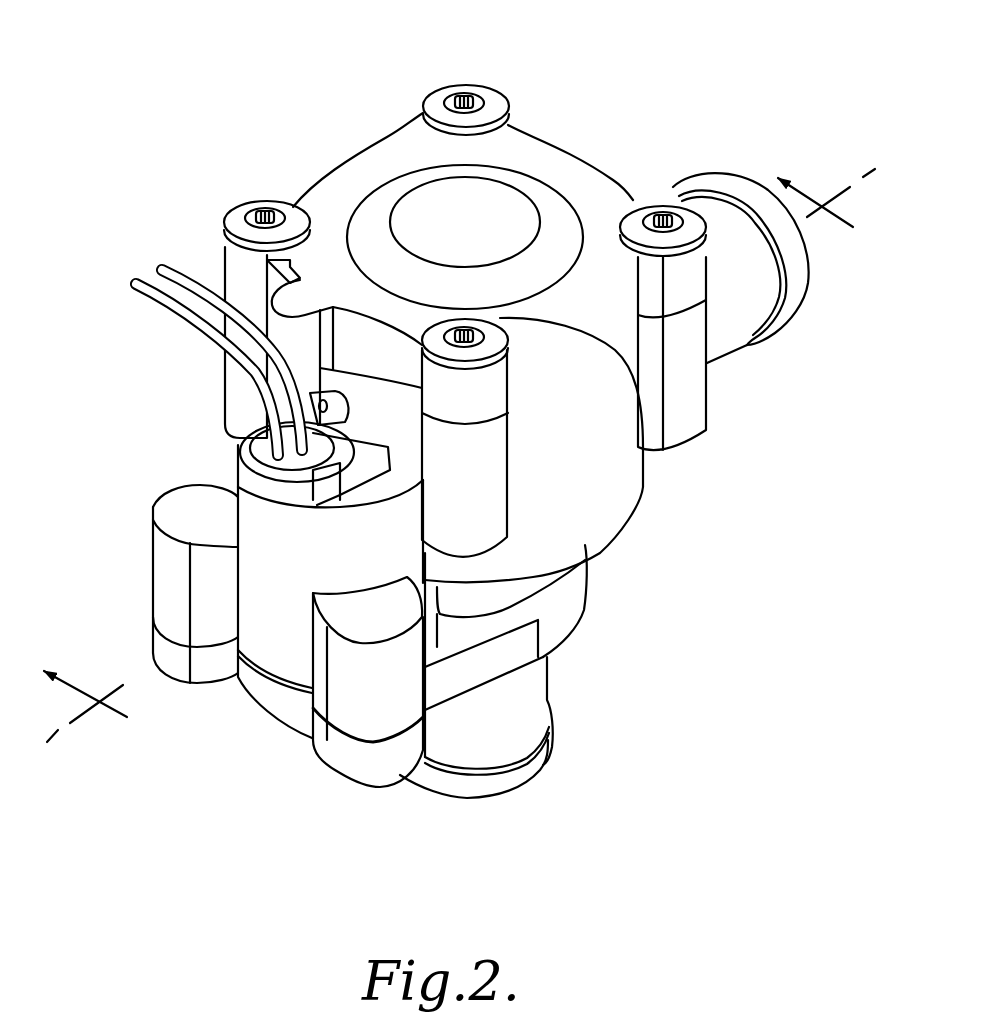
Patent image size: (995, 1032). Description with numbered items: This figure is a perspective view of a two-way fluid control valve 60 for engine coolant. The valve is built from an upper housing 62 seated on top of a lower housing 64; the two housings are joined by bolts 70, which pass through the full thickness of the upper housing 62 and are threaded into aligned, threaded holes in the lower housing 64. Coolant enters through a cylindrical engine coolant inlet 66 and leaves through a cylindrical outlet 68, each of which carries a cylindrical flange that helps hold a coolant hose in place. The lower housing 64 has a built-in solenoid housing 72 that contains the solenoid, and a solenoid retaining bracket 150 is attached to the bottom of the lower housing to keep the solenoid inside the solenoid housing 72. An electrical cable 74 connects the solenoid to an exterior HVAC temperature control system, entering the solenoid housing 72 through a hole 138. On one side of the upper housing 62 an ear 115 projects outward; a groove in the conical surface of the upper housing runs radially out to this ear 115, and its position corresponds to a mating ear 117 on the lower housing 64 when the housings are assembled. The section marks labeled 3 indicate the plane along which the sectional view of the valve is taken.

The two-way fluid control valve 60 is at (230, 124).
The upper housing 62 is at (598, 163).
The lower housing 64 is at (644, 506).
The engine coolant inlet 66 is at (549, 687).
The outlet 68 is at (727, 355).
The bolts 70 is at (467, 94).
The solenoid housing 72 is at (280, 650).
The electrical cable 74 is at (185, 308).
The ear 115 is at (293, 301).
The mating ear 117 is at (307, 381).
The hole 138 is at (240, 434).
The solenoid retaining bracket 150 is at (358, 765).
The section line for FIG. 3 is at (467, 466).